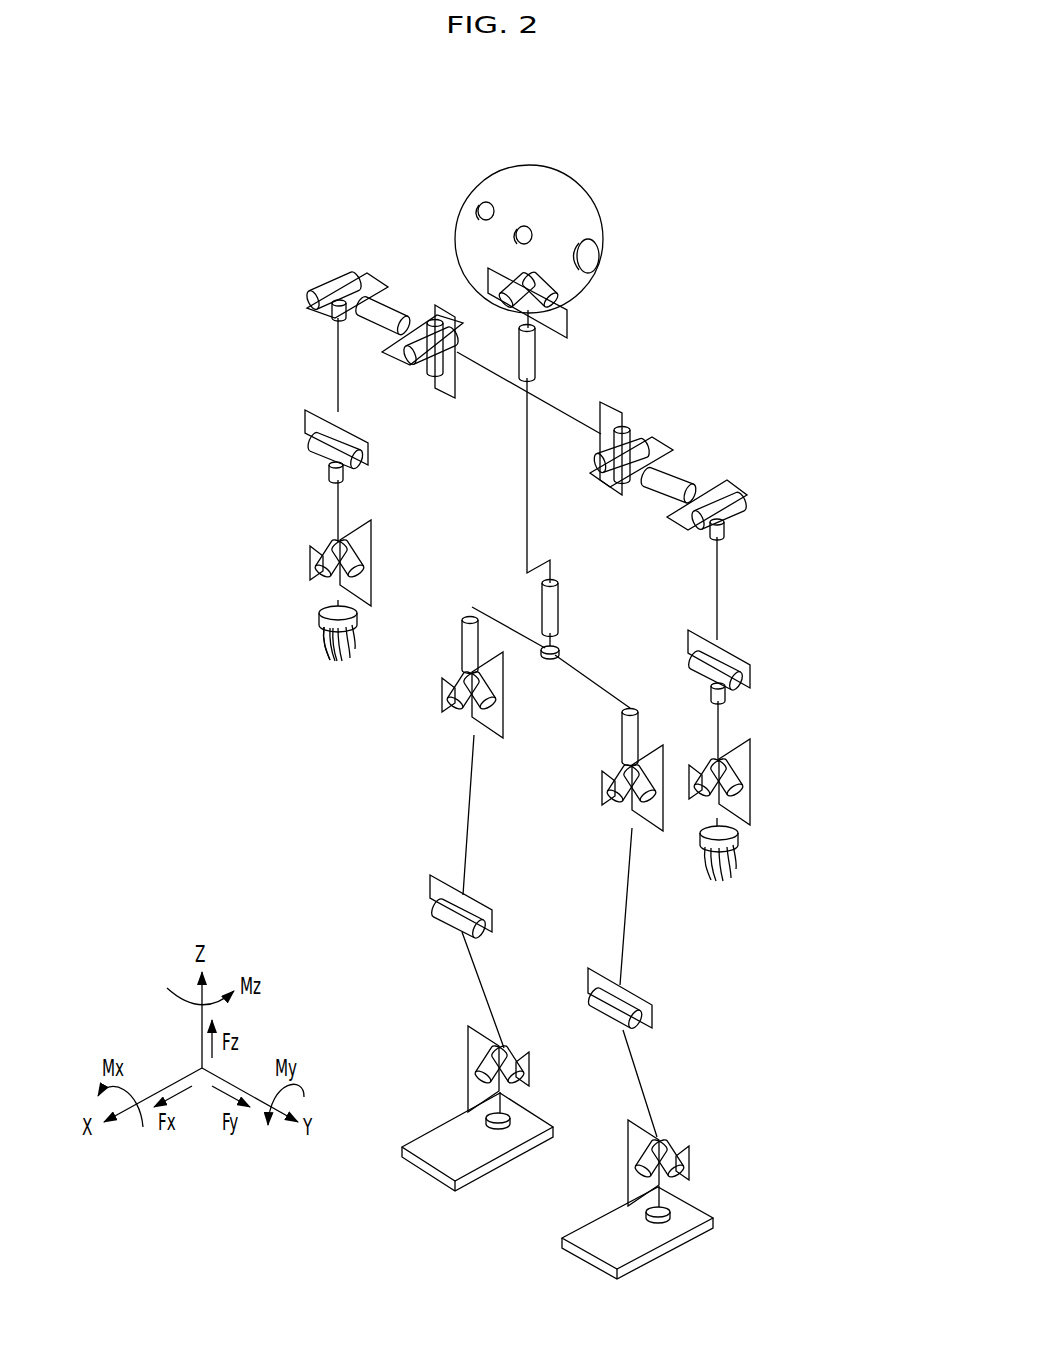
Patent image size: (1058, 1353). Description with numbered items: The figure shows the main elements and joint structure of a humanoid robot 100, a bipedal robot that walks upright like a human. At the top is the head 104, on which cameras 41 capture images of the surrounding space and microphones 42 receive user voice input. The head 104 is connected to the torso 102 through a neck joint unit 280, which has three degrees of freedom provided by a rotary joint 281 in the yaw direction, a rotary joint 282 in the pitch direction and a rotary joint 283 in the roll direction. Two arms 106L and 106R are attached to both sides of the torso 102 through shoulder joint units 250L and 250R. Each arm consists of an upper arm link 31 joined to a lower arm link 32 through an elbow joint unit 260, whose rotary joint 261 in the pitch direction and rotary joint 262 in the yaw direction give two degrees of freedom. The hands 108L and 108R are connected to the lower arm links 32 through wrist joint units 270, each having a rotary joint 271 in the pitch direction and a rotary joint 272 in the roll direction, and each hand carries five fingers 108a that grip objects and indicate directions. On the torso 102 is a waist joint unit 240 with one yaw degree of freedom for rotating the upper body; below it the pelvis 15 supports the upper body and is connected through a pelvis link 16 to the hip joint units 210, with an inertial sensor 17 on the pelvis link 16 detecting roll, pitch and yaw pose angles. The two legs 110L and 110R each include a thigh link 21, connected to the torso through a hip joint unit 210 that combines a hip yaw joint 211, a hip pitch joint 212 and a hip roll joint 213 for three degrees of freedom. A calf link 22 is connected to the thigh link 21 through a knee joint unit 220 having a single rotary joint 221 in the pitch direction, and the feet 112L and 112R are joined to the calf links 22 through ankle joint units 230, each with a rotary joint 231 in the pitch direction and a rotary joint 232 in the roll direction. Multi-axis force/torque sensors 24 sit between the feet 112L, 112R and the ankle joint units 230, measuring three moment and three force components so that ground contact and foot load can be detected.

The humanoid robot 100 is at (736, 97).
The head 104 is at (597, 186).
The cameras 41 is at (515, 240).
The microphones 42 is at (596, 258).
The neck joint unit 280 is at (544, 325).
The rotary joint in the yaw direction 281 is at (532, 356).
The rotary joint in the pitch direction 282 is at (553, 294).
The rotary joint in the roll direction 283 is at (507, 296).
The torso 102 is at (527, 452).
The right arm 106R is at (227, 431).
The left arm 106L is at (812, 642).
The right shoulder joint unit 250R is at (339, 260).
The left shoulder joint unit 250L is at (684, 436).
The upper arm link 31 is at (718, 572).
The elbow joint unit 260 is at (505, 538).
The rotary joint in the pitch direction 261 is at (340, 448).
The rotary joint in the yaw direction 262 is at (344, 475).
The lower arm link 32 is at (720, 722).
The wrist joint unit 270 is at (530, 671).
The rotary joint in the pitch direction 271 is at (358, 570).
The rotary joint in the roll direction 272 is at (356, 554).
The right hand 108R is at (317, 633).
The left hand 108L is at (762, 852).
The fingers 108a is at (330, 652).
The waist joint unit 240 is at (555, 608).
The inertial sensor 17 is at (560, 652).
The pelvis 15 is at (545, 645).
The pelvis link 16 is at (603, 688).
The right leg 110R is at (368, 850).
The left leg 110L is at (692, 945).
The hip yaw joint 211 is at (466, 640).
The hip joint unit 210 is at (504, 774).
The hip pitch joint 212 is at (493, 703).
The hip roll joint 213 is at (455, 713).
The thigh link 21 is at (631, 884).
The knee joint unit 220 is at (419, 930).
The rotary joint in the pitch direction 221 is at (463, 897).
The calf link 22 is at (652, 1073).
The ankle joint unit 230 is at (453, 1063).
The rotary joint in the pitch direction 231 is at (523, 1078).
The rotary joint in the roll direction 232 is at (512, 1052).
The multi-axis force/torque sensor 24 is at (668, 1218).
The right foot 112R is at (430, 1166).
The left foot 112L is at (586, 1257).